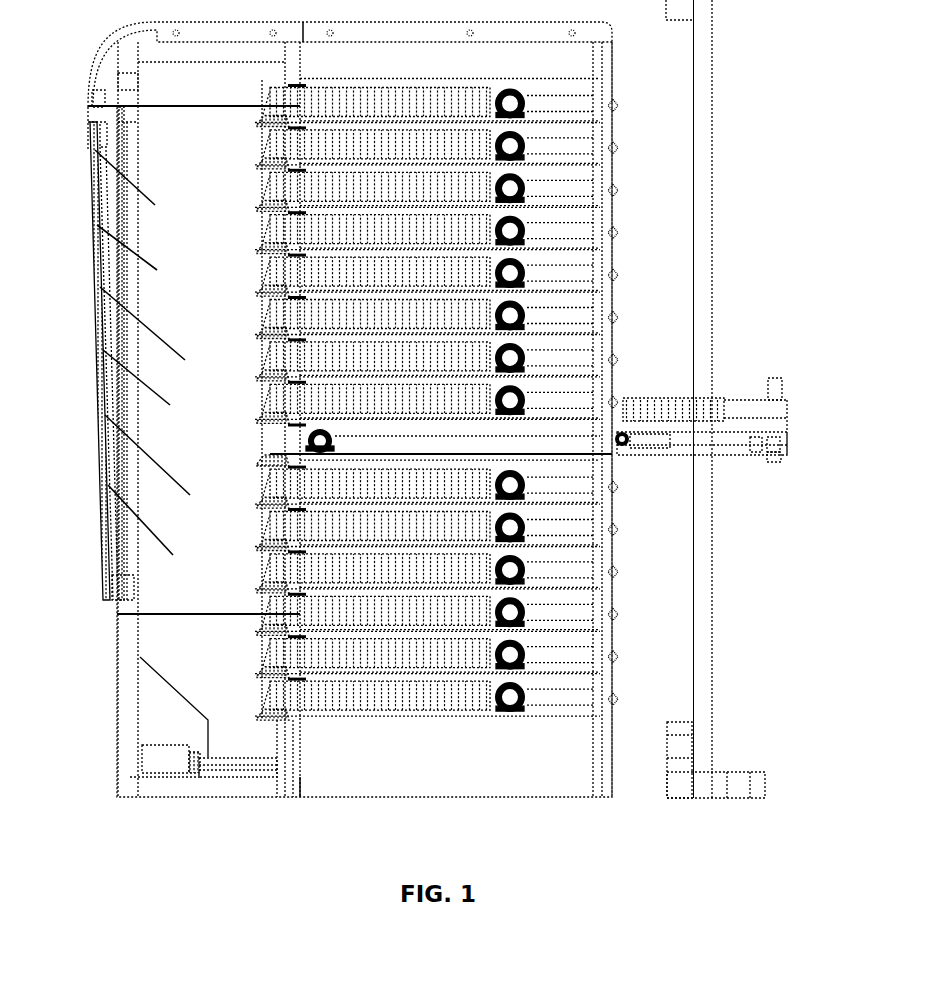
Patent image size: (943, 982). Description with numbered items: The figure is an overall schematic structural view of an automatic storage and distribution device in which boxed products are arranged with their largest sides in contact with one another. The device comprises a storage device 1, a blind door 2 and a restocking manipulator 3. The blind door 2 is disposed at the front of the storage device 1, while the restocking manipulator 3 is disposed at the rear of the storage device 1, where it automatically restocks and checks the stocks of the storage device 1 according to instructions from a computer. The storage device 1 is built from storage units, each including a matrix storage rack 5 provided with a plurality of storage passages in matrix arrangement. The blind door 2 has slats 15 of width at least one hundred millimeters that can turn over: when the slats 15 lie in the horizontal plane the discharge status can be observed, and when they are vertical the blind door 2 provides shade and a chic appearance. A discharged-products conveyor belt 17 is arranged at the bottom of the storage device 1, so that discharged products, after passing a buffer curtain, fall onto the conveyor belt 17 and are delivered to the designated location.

The storage device 1 is at (570, 187).
The blind door 2 is at (92, 163).
The restocking manipulator 3 is at (768, 414).
The matrix storage rack 5 is at (612, 260).
The slats 15 is at (98, 228).
The discharged-products conveyor belt 17 is at (250, 760).